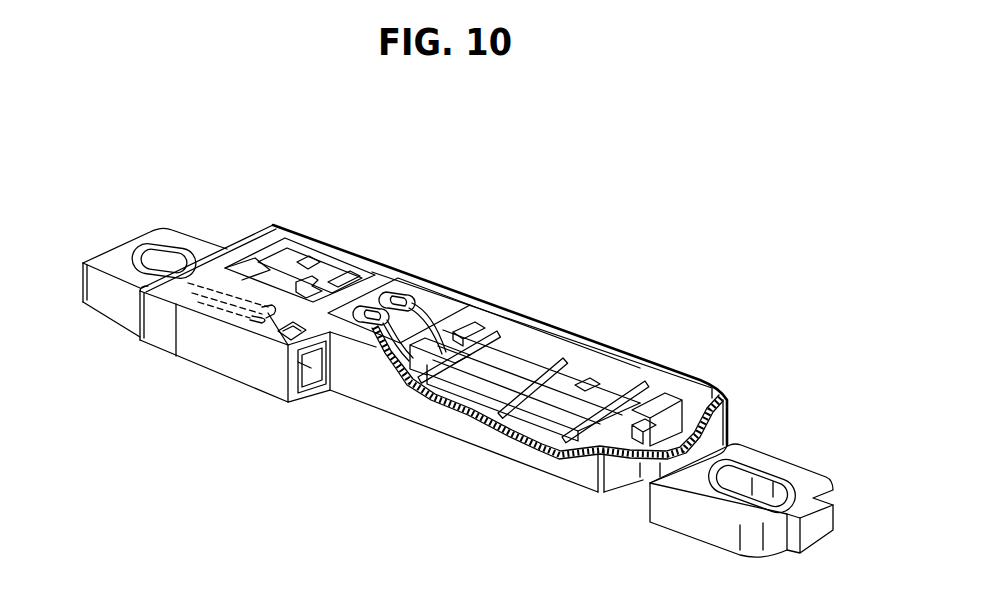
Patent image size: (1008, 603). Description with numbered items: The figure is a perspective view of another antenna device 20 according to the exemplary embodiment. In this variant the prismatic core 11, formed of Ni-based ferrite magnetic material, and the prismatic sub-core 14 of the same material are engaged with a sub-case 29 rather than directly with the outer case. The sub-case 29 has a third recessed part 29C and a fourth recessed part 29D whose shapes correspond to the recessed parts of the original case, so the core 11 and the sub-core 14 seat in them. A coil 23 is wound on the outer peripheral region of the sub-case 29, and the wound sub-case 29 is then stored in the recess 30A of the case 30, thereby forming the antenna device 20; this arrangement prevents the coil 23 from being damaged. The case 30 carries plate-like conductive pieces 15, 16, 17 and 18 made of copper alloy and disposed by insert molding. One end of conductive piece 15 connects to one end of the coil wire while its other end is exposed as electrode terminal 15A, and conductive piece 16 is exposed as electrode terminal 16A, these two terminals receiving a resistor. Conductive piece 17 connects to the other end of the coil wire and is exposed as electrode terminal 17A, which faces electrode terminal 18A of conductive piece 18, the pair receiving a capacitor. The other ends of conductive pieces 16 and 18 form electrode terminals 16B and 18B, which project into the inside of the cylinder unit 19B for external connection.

The another antenna device 20 is at (161, 135).
The core 11 is at (575, 352).
The sub-core 14 is at (668, 407).
The conductive piece 15 is at (398, 314).
The electrode terminal 15A is at (298, 292).
The conductive piece 16 is at (142, 320).
The electrode terminal 16A is at (250, 272).
The electrode terminal 16B is at (257, 320).
The conductive piece 17 is at (412, 305).
The electrode terminal 17A is at (357, 273).
The conductive piece 18 is at (268, 298).
The electrode terminal 18A is at (308, 268).
The electrode terminal 18B is at (268, 312).
The cylinder unit 19B is at (312, 388).
The coil 23 is at (560, 433).
The sub-case 29 is at (520, 410).
The third recessed part 29C is at (465, 397).
The fourth recessed part 29D is at (585, 387).
The case 30 is at (665, 367).
The recess 30A is at (595, 337).